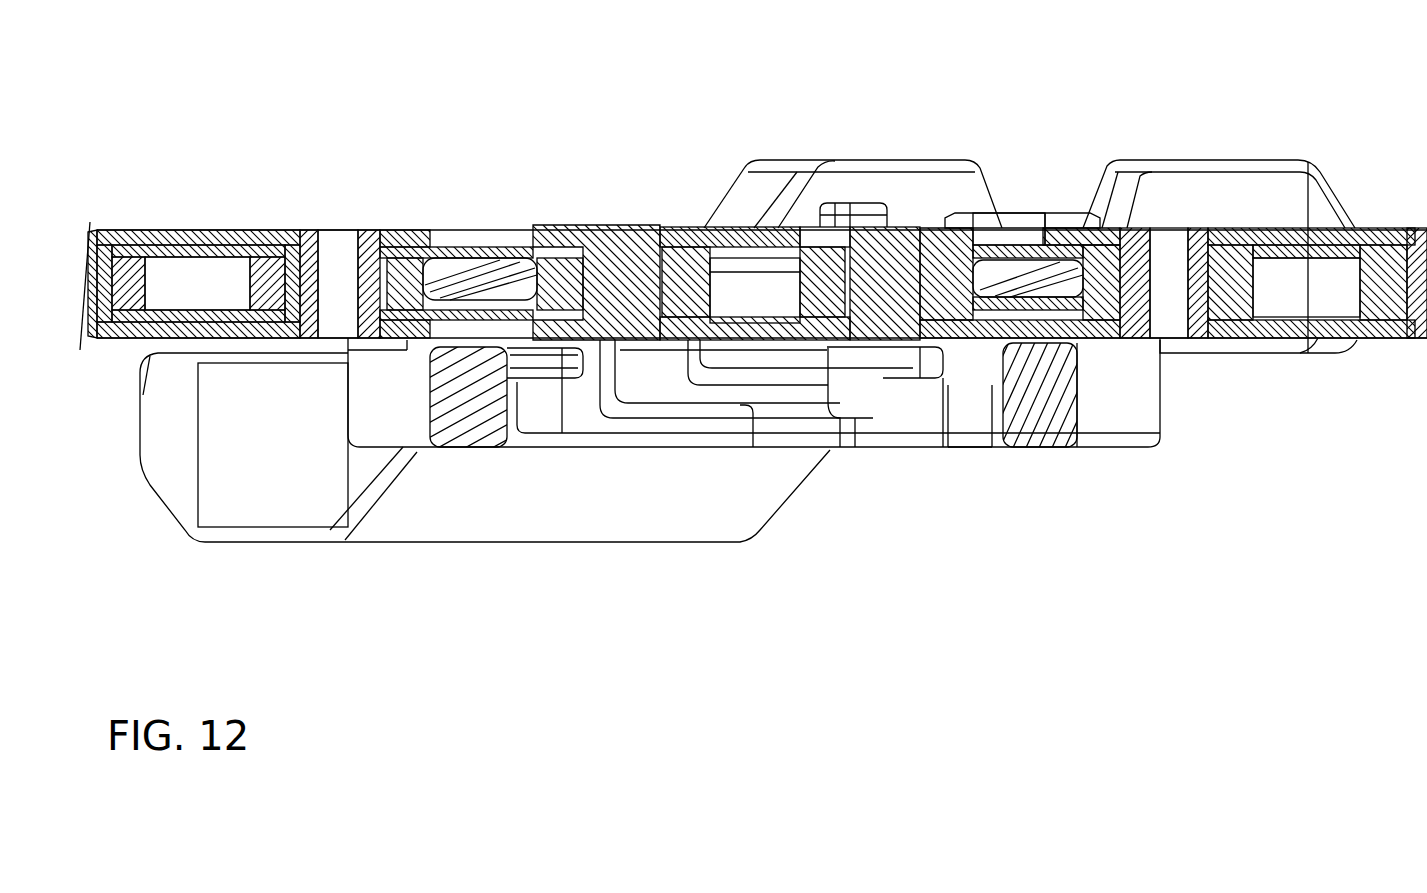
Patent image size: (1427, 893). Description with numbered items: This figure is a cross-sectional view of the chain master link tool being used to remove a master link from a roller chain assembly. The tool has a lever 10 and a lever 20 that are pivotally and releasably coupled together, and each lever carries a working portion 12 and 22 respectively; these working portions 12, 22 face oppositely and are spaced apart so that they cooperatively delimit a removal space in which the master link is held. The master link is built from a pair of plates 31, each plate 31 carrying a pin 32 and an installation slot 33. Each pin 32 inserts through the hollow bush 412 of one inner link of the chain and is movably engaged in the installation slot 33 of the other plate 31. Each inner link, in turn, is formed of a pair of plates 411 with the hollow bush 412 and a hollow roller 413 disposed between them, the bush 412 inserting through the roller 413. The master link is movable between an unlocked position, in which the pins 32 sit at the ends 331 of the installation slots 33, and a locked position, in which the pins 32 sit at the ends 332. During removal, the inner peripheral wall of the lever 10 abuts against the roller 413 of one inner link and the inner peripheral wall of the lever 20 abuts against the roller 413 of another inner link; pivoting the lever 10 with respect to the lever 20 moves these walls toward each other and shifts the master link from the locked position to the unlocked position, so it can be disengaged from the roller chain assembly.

The lever 10 is at (318, 565).
The working portion 12 is at (1022, 275).
The lever 20 is at (1215, 152).
The working portion 22 is at (456, 275).
The plate 31 is at (752, 250).
The pin 32 is at (900, 240).
The installation slot 33 is at (831, 242).
The end of installation slot 331 is at (684, 342).
The end of installation slot 332 is at (605, 342).
The plate 411 is at (691, 258).
The hollow bush 412 is at (638, 268).
The hollow roller 413 is at (559, 275).